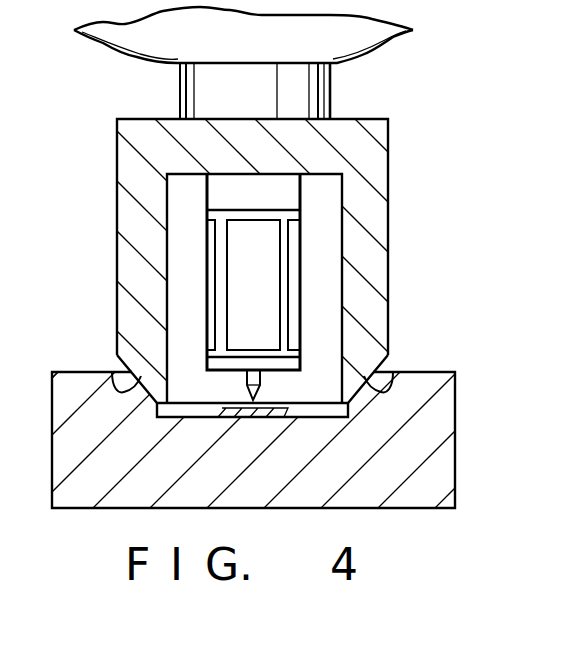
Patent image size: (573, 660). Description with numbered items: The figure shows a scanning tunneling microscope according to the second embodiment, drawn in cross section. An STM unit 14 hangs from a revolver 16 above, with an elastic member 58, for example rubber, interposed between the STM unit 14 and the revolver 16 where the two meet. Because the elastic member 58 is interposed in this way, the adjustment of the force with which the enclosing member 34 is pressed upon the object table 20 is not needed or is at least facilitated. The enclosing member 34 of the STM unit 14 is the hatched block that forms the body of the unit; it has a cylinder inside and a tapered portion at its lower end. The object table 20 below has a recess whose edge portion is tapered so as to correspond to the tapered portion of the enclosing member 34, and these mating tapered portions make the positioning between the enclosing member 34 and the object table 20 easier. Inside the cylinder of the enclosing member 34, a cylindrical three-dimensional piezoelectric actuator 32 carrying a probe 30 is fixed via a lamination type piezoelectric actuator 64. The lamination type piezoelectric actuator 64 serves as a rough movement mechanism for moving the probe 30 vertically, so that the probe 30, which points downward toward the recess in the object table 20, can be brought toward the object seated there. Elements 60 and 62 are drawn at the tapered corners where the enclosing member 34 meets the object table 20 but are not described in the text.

The STM unit 14 is at (392, 163).
The revolver 16 is at (141, 57).
The object table 20 is at (457, 398).
The probe 30 is at (261, 397).
The cylindrical three-dimensional piezoelectric actuator 32 is at (206, 263).
The enclosing member 34 is at (389, 249).
The elastic member 58 is at (331, 97).
The seal 60 is at (152, 367).
The recess 62 is at (118, 380).
The lamination type piezoelectric actuator 64 is at (303, 198).